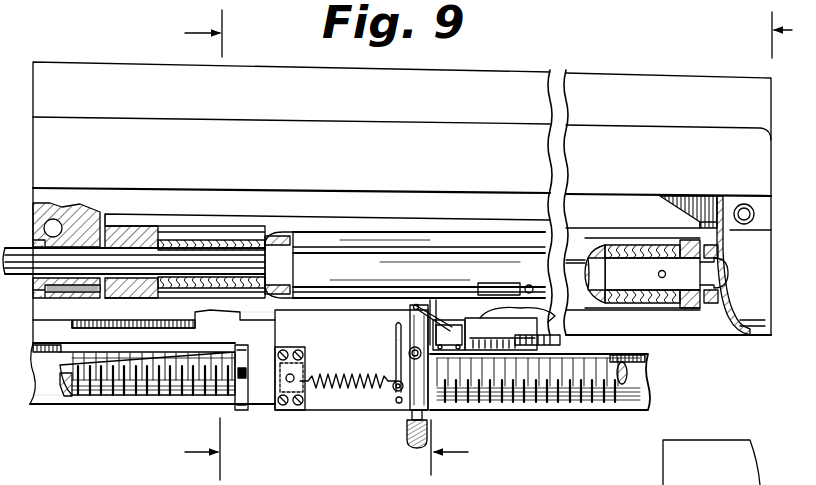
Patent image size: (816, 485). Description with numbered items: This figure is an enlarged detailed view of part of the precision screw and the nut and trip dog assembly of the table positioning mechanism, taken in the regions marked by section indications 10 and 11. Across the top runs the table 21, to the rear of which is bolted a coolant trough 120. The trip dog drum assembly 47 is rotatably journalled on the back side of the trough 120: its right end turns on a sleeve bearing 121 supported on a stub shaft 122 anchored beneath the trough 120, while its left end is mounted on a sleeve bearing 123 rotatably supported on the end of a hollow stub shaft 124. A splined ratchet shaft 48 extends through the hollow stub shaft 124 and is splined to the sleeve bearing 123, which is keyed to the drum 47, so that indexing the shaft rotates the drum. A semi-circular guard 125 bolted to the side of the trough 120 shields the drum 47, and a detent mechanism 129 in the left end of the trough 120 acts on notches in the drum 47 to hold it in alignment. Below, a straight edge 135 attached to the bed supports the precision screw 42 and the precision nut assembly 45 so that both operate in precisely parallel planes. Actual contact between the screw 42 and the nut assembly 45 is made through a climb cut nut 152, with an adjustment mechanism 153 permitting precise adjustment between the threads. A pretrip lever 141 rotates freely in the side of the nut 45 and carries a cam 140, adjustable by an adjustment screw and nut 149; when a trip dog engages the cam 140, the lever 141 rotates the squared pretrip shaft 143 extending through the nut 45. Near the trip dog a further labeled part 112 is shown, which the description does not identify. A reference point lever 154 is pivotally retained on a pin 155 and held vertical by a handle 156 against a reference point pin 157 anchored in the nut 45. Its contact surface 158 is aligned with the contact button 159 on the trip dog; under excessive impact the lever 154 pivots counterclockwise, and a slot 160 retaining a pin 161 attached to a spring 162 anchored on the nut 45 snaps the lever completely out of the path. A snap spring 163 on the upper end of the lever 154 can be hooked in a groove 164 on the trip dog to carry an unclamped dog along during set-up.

The table 21 is at (62, 78).
The section line 10- 10 is at (183, 245).
The section line 11- 11 is at (615, 243).
The coolant trough 120 is at (190, 145).
The splined ratchet shaft 48 is at (13, 247).
The drum assembly 47 is at (327, 242).
The hollow stub shaft 124 is at (52, 298).
The sleeve bearing 123 is at (146, 300).
The contact surface 158 is at (420, 304).
The contact button 159 is at (432, 320).
The lever 112 is at (457, 308).
The groove 164 is at (483, 298).
The stub shaft 122 is at (622, 275).
The sleeve bearing 121 is at (630, 300).
The semi-circular guard 125 is at (748, 312).
The detent mechanism 129 is at (64, 322).
The straight edge 135 is at (46, 410).
The precision screw 42 is at (108, 398).
The climb cut nut 152 is at (243, 412).
The adjustment mechanism 153 is at (250, 373).
The precision nut assembly 45 is at (316, 405).
The pretrip shaft 143 is at (270, 321).
The spring 162 is at (337, 374).
The snap spring 163 is at (396, 324).
The slot 160 is at (396, 342).
The reference point lever 154 is at (430, 405).
The pin 155 is at (409, 354).
The pin 161 is at (393, 388).
The reference point pin 157 is at (395, 402).
The handle 156 is at (407, 436).
The adjustment screw and nut 149 is at (537, 339).
The cam 140 is at (470, 328).
The pretrip lever 141 is at (505, 317).